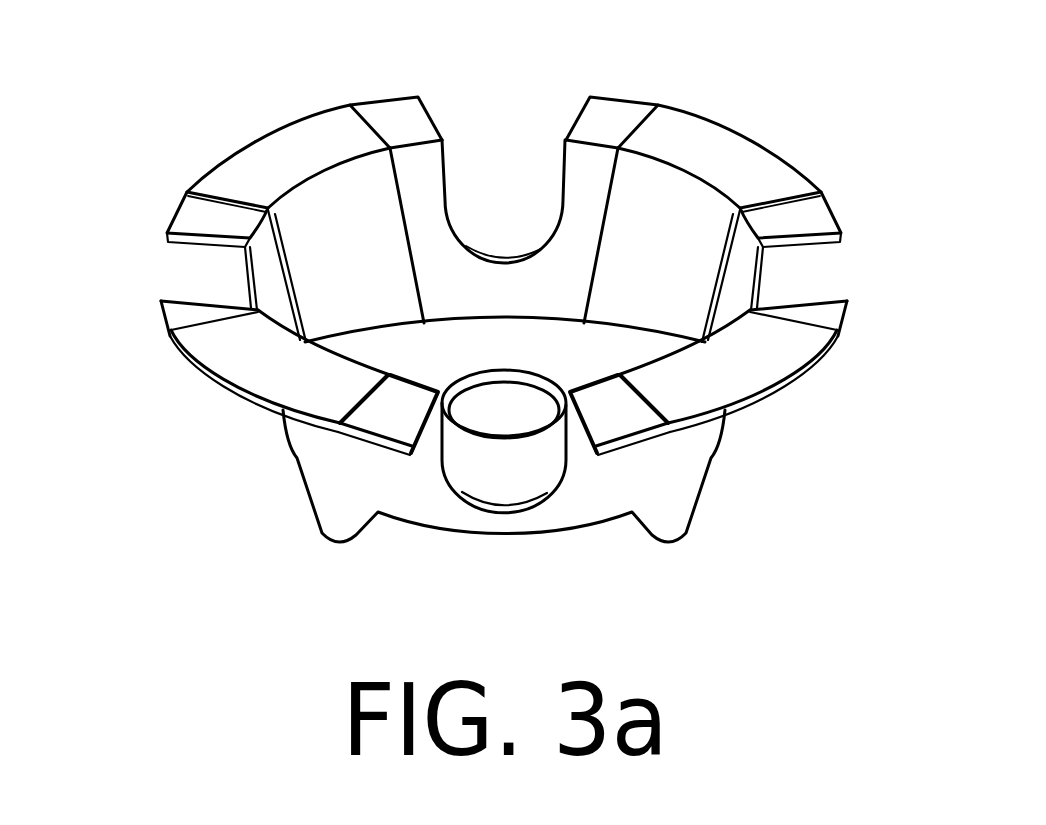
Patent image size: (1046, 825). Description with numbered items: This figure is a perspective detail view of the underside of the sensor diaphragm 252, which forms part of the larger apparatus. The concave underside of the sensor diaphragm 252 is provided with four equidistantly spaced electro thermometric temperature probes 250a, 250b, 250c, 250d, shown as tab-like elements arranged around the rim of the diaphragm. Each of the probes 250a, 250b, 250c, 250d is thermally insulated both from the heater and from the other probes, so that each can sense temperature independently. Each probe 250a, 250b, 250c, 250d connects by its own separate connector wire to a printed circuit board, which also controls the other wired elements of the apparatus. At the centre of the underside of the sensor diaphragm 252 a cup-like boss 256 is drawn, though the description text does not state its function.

The electro thermometric temperature probe 250a is at (720, 146).
The electro thermometric temperature probe 250b is at (755, 372).
The electro thermometric temperature probe 250c is at (253, 372).
The electro thermometric temperature probe 250d is at (288, 146).
The sensor diaphragm 252 is at (402, 503).
The central boss 256 is at (505, 418).